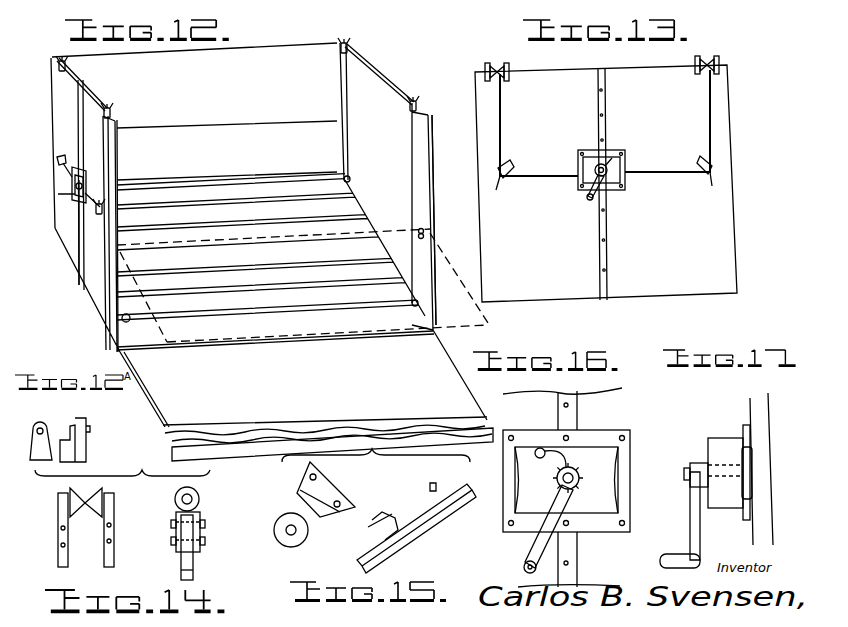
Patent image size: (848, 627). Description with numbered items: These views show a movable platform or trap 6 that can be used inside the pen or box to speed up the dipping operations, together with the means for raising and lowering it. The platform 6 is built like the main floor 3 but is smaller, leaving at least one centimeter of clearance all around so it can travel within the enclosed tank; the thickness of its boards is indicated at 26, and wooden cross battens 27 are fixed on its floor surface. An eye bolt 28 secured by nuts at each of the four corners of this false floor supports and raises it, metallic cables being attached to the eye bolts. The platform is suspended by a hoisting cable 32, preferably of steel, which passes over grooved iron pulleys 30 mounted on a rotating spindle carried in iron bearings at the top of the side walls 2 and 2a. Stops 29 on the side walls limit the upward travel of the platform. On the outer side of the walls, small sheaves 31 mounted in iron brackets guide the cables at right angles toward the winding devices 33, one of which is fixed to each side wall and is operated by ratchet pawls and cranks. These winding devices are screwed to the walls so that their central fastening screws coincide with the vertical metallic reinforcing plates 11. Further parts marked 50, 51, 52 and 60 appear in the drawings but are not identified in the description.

In FIG. 12, the side wall 2 is at (243, 205).
In FIG. 13, the side wall 2 is at (606, 183).
In FIG. 14, the side wall 2 is at (183, 571).
In FIG. 16, the side wall 2 is at (562, 487).
In FIG. 17, the side wall 2 is at (755, 405).
In FIG. 12, the side wall 2a is at (80, 254).
In FIG. 12, the floor 3 is at (200, 197).
In FIG. 12, the movable platform or trap 6 is at (440, 220).
In FIG. 12, the metallic reinforcing plates 11 is at (76, 262).
In FIG. 13, the metallic reinforcing plates 11 is at (598, 250).
In FIG. 16, the metallic reinforcing plates 11 is at (570, 552).
In FIG. 12, the thickness of the boards 26 is at (272, 322).
In FIG. 12, the wooden cross battens 27 is at (275, 262).
In FIG. 12, the eye bolt 28 is at (122, 324).
In FIG. 12, the stops 29 is at (337, 122).
In FIG. 12A, the stops 29 is at (30, 445).
In FIG. 14, the grooved iron pulleys 30 is at (60, 502).
In FIG. 13, the small sheaves 31 is at (498, 184).
In FIG. 15, the small sheaves 31 is at (288, 546).
In FIG. 12, the hoisting cable 32 is at (440, 153).
In FIG. 13, the hoisting cable 32 is at (502, 130).
In FIG. 12, the winding devices 33 is at (72, 200).
In FIG. 13, the winding devices 33 is at (584, 186).
In FIG. 16, the winding devices 33 is at (532, 498).
In FIG. 17, the winding devices 33 is at (718, 438).
In FIG. 12, the hook 50 is at (110, 108).
In FIG. 13, the hook 50 is at (498, 64).
In FIG. 12, the catch 51 is at (57, 161).
In FIG. 12, the connecting rod 52 is at (100, 138).
In FIG. 12, the frame 60 is at (407, 10).